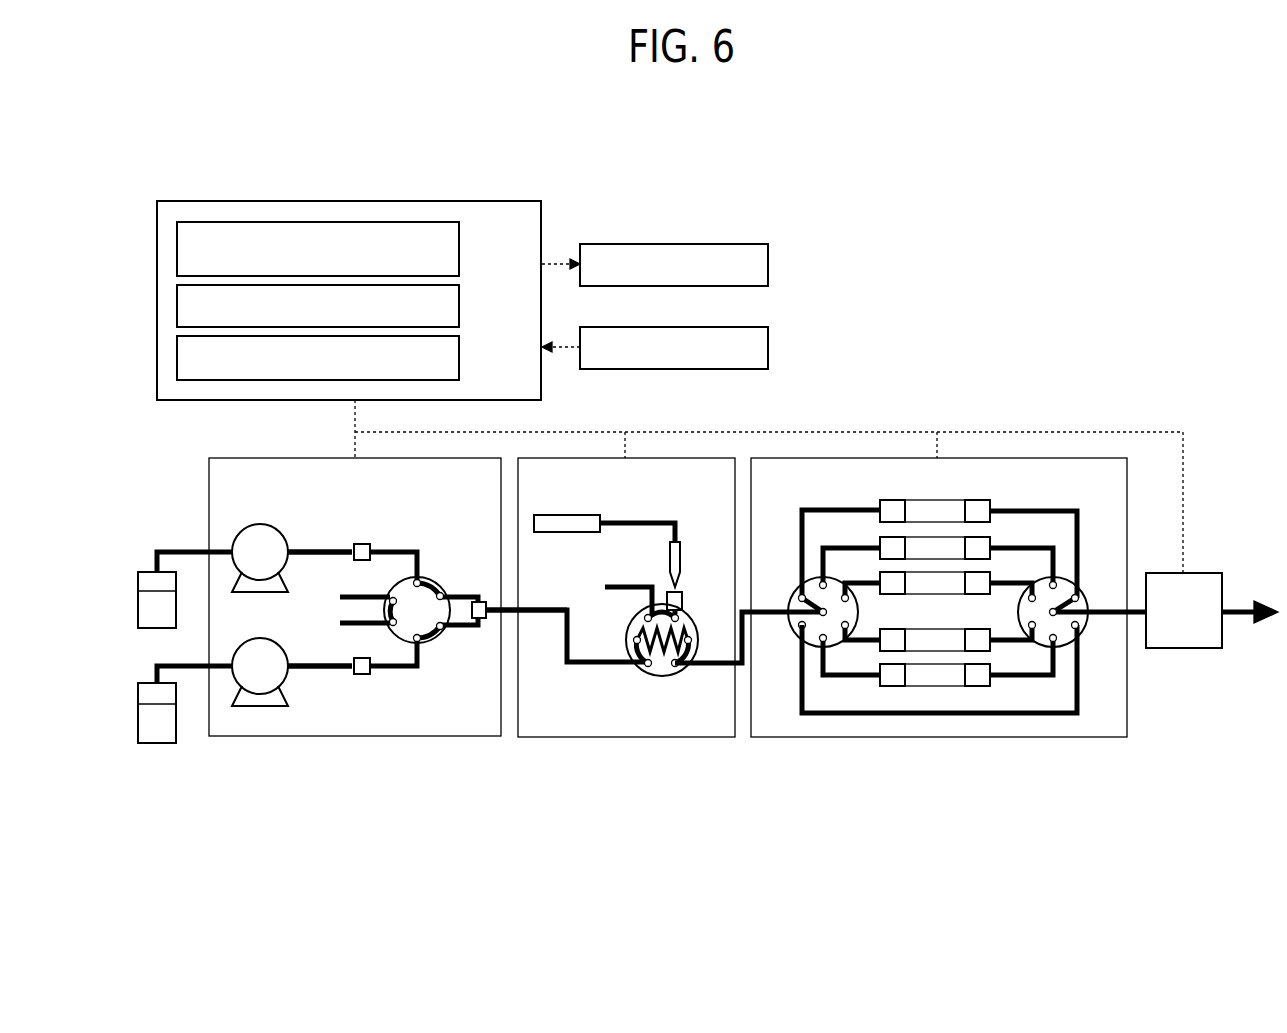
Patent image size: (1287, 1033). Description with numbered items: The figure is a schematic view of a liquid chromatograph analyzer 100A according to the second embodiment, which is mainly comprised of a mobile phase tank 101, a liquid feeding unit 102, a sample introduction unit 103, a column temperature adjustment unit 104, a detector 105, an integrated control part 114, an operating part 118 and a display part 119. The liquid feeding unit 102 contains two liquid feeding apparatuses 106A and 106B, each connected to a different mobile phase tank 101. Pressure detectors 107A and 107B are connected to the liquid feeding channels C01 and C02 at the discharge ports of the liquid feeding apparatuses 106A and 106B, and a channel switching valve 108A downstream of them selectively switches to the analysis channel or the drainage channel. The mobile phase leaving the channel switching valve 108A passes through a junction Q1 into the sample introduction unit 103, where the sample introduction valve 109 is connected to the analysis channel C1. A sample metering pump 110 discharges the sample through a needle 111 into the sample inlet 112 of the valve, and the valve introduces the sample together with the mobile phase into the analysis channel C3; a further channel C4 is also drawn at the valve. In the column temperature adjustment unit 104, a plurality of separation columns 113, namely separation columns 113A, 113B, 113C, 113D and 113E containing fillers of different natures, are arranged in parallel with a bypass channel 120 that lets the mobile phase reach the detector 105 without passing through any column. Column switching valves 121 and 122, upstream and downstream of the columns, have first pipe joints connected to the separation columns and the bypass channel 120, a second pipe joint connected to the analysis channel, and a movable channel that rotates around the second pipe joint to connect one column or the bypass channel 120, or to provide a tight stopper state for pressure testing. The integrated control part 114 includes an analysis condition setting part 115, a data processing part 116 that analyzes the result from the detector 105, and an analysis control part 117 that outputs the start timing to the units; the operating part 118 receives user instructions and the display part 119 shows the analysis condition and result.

The liquid chromatograph analyzer 100A is at (988, 358).
The mobile phase tank 101 is at (138, 615).
The liquid feeding unit 102 is at (350, 737).
The sample introduction unit 103 is at (632, 737).
The column temperature adjustment unit 104 is at (932, 737).
The detector 105 is at (1186, 652).
The liquid feeding apparatus 106A is at (280, 507).
The liquid feeding apparatus 106B is at (265, 638).
The pressure detector 107A is at (378, 534).
The pressure detector 107B is at (368, 675).
The channel switching valve 108A is at (452, 564).
The sample introduction valve 109 is at (650, 674).
The sample metering pump 110 is at (575, 513).
The needle 111 is at (681, 555).
The sample inlet 112 is at (684, 598).
The separation column 113 is at (978, 585).
The separation column 113A is at (985, 504).
The separation column 113B is at (985, 538).
The separation column 113C is at (980, 574).
The separation column 113D is at (980, 652).
The separation column 113E is at (990, 687).
The integrated control part 114 is at (483, 201).
The analysis condition setting part 115 is at (461, 250).
The data processing part 116 is at (461, 306).
The analysis control part 117 is at (461, 360).
The operating part 118 is at (769, 349).
The display part 119 is at (769, 266).
The bypass channel 120 is at (1060, 714).
The column switching valve 121 is at (798, 632).
The column switching valve 122 is at (1082, 632).
The liquid feeding channel C01 is at (303, 550).
The liquid feeding channel C02 is at (312, 672).
The analysis channel C1 is at (542, 616).
The analysis channel C3 is at (718, 668).
The flow path C4 is at (622, 584).
The junction Q1 is at (482, 620).